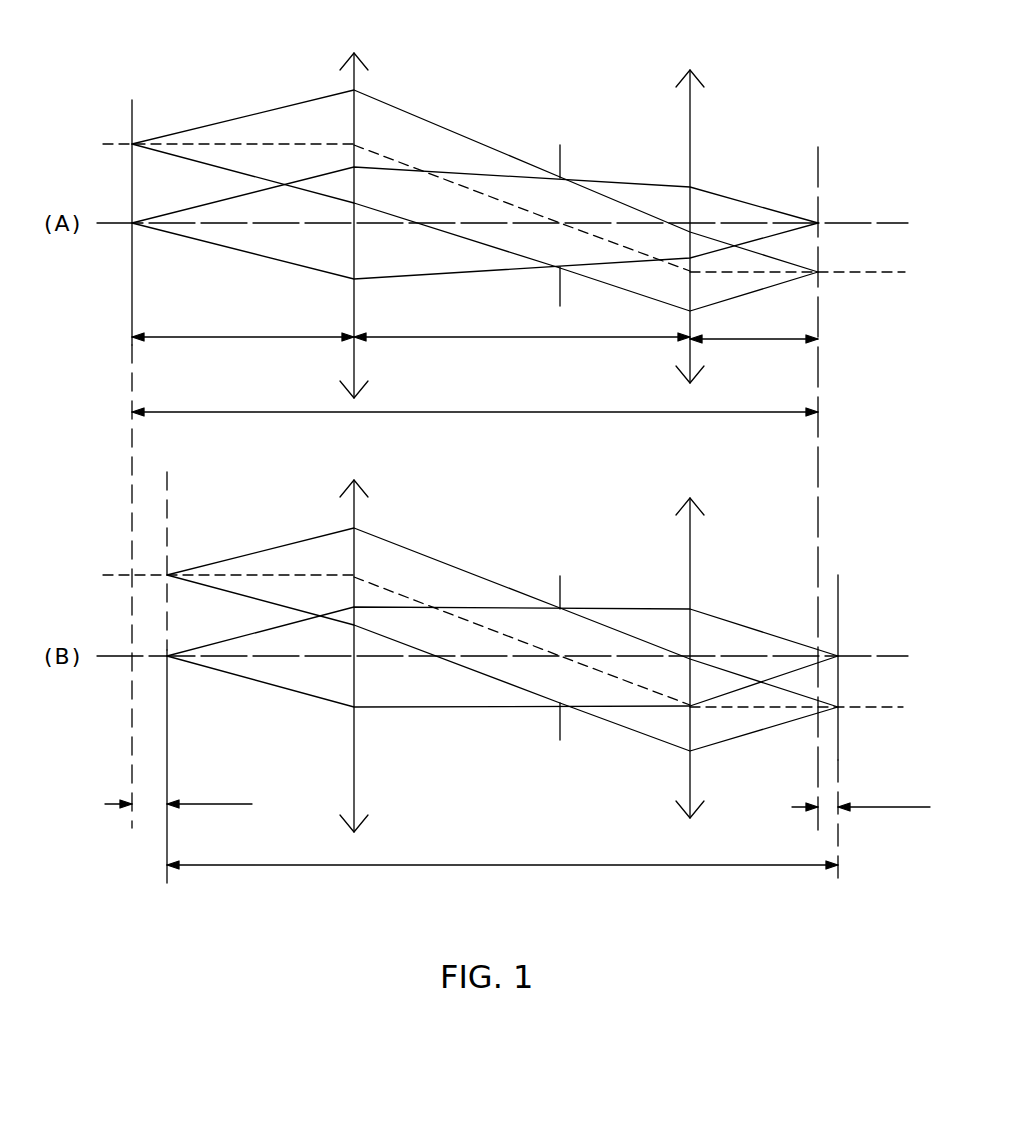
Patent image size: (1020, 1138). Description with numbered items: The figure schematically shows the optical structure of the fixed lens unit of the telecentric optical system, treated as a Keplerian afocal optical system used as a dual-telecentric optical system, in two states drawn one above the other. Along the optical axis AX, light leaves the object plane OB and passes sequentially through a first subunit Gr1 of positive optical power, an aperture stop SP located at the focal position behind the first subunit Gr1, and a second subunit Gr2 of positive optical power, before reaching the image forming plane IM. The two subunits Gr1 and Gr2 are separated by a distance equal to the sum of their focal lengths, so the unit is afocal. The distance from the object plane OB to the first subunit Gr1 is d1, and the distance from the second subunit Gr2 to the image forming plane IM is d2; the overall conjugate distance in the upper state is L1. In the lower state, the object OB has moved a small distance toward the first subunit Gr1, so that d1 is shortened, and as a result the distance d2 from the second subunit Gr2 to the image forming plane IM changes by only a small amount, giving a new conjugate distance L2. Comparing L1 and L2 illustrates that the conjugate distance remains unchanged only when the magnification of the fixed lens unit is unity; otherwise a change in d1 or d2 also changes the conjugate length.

The object plane OB is at (131, 115).
The first subunit Gr1 is at (356, 425).
The second subunit Gr2 is at (693, 430).
The aperture stop SP is at (562, 157).
The image forming plane IM is at (812, 165).
The optical axis AX is at (863, 223).
The distance from the object plane to the first subunit d1 is at (243, 326).
The distance from the second subunit to the image forming plane d2 is at (754, 328).
The conjugate distance in the first state L1 is at (475, 400).
The conjugate distance in the second state L2 is at (502, 854).